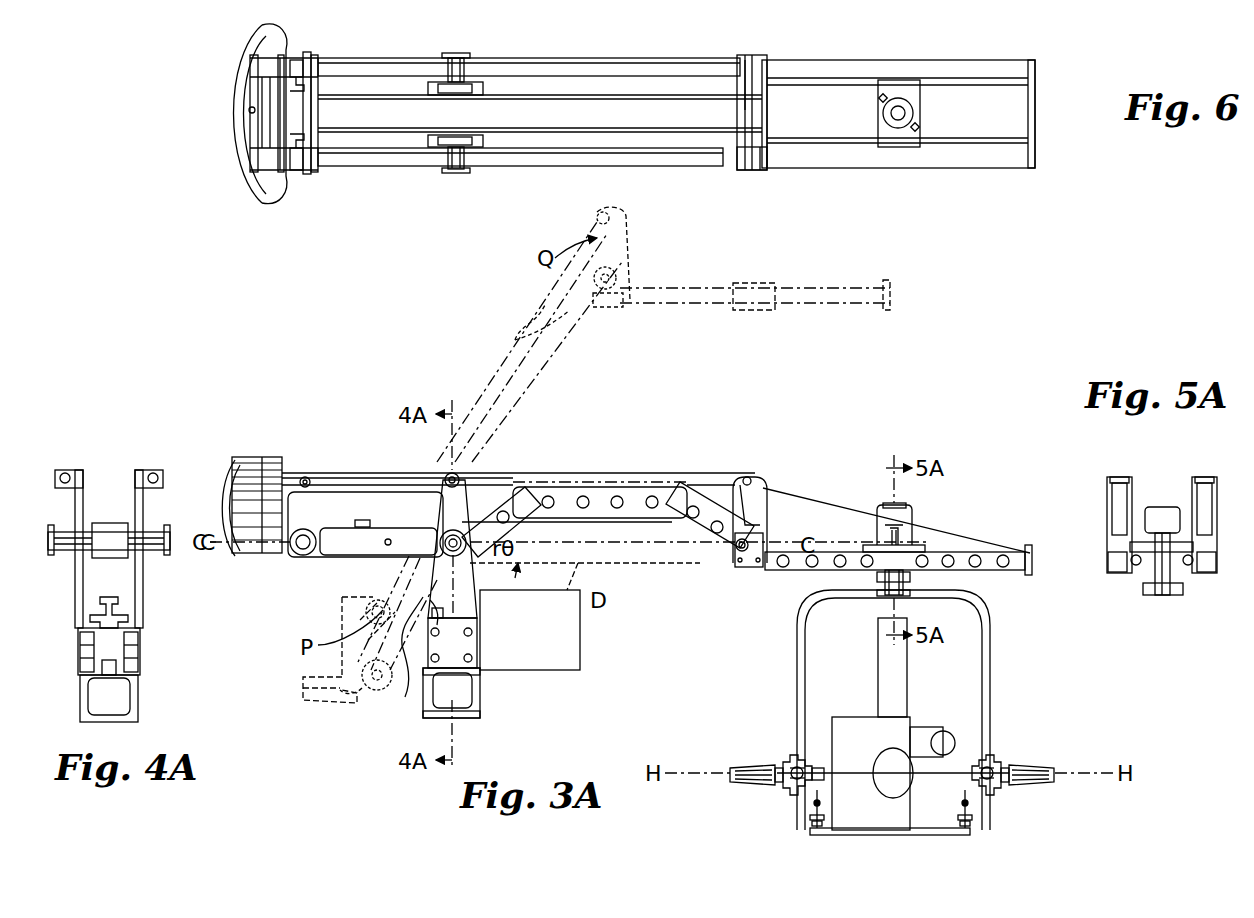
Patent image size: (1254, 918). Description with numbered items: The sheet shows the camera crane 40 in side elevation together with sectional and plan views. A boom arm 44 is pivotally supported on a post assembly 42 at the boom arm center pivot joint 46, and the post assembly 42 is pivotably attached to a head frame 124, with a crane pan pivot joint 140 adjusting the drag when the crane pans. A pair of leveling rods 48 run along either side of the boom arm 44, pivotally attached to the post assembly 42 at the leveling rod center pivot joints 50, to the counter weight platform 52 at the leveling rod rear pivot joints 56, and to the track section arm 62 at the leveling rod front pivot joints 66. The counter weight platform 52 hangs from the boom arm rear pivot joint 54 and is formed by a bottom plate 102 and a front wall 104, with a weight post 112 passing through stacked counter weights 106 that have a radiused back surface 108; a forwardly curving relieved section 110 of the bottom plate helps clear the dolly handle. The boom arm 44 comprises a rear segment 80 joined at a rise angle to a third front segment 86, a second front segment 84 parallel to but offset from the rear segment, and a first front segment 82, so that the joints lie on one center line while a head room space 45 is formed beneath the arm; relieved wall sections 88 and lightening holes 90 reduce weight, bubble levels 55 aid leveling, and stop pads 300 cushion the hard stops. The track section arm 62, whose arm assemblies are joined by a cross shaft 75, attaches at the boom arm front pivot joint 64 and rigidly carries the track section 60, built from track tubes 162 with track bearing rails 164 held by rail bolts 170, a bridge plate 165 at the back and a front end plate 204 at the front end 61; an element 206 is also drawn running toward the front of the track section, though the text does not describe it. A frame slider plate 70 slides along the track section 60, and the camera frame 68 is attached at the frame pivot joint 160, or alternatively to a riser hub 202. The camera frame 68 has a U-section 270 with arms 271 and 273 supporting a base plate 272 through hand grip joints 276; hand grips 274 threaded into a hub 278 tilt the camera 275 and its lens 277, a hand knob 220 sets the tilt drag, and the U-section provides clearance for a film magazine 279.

In FIG. 3A, the crane 40 is at (440, 388).
In FIG. 3A, the post assembly 42 is at (478, 602).
In FIG. 6, the boom arm 44 is at (552, 108).
In FIG. 3A, the boom arm 44 is at (505, 355).
In FIG. 3A, the head room space 45 is at (530, 630).
In FIG. 6, the boom arm center pivot joint 46 is at (478, 58).
In FIG. 3A, the boom arm center pivot joint 46 is at (462, 530).
In FIG. 6, the leveling rods 48 is at (628, 62).
In FIG. 3A, the leveling rods 48 is at (698, 474).
In FIG. 4A, the leveling rods 48 is at (158, 472).
In FIG. 6, the leveling rod center pivot joints 50 is at (464, 160).
In FIG. 3A, the leveling rod center pivot joints 50 is at (444, 480).
In FIG. 6, the counter weight platform 52 is at (274, 178).
In FIG. 3A, the counter weight platform 52 is at (268, 560).
In FIG. 6, the boom arm rear pivot joint 54 is at (320, 70).
In FIG. 3A, the boom arm rear pivot joint 54 is at (303, 556).
In FIG. 3A, the bubble levels 55 is at (362, 520).
In FIG. 6, the leveling rod rear pivot joints 56 is at (318, 158).
In FIG. 3A, the leveling rod rear pivot joints 56 is at (308, 478).
In FIG. 6, the track section 60 is at (950, 162).
In FIG. 3A, the track section 60 is at (820, 288).
In FIG. 3A, the front end 61 is at (1005, 572).
In FIG. 3A, the track section arm 62 is at (620, 233).
In FIG. 5A, the track section arm 62 is at (1107, 500).
In FIG. 6, the boom arm front pivot joint 64 is at (750, 58).
In FIG. 3A, the boom arm front pivot joint 64 is at (738, 567).
In FIG. 3A, the leveling rod front pivot joints 66 is at (746, 477).
In FIG. 5A, the leveling rod front pivot joints 66 is at (1122, 480).
In FIG. 3A, the camera frame 68 is at (797, 697).
In FIG. 3A, the frame slider plate 70 is at (918, 545).
In FIG. 6, the cross shaft 75 is at (752, 105).
In FIG. 3A, the rear segment 80 is at (382, 560).
In FIG. 3A, the first front segment 82 is at (710, 548).
In FIG. 3A, the second front segment 84 is at (636, 525).
In FIG. 3A, the third front segment 86 is at (508, 540).
In FIG. 3A, the relieved wall sections 88 is at (600, 495).
In FIG. 3A, the lightening holes 90 is at (652, 495).
In FIG. 3A, the bottom plate 102 is at (318, 703).
In FIG. 3A, the front wall 104 is at (292, 512).
In FIG. 3A, the counter weights 106 is at (236, 458).
In FIG. 6, the radiused back surface 108 is at (246, 190).
In FIG. 3A, the relieved section 110 is at (228, 570).
In FIG. 6, the weight post 112 is at (250, 112).
In FIG. 3A, the head frame 124 is at (476, 698).
In FIG. 4A, the head frame 124 is at (140, 697).
In FIG. 4A, the crane pan pivot joint 140 is at (125, 600).
In FIG. 3A, the frame pivot joint 160 is at (850, 574).
In FIG. 6, the track tubes 162 is at (1020, 72).
In FIG. 6, the track bearing rails 164 is at (1018, 132).
In FIG. 6, the bridge plate 165 is at (770, 122).
In FIG. 6, the rail bolts 170 is at (915, 118).
In FIG. 3A, the riser hub 202 is at (875, 525).
In FIG. 5A, the riser hub 202 is at (1158, 505).
In FIG. 6, the front end plate 204 is at (1037, 98).
In FIG. 3A, the front end plate 204 is at (1034, 560).
In FIG. 3A, the cable 206 is at (800, 495).
In FIG. 6, the hand knob 220 is at (446, 56).
In FIG. 3A, the hand knob 220 is at (990, 765).
In FIG. 3A, the U-section 270 is at (988, 683).
In FIG. 3A, the arm 271 is at (798, 672).
In FIG. 3A, the base plate 272 is at (968, 800).
In FIG. 3A, the arm 273 is at (988, 650).
In FIG. 3A, the hand grips 274 is at (745, 770).
In FIG. 3A, the camera 275 is at (852, 727).
In FIG. 3A, the hand grip joints 276 is at (785, 794).
In FIG. 3A, the camera lens 277 is at (876, 782).
In FIG. 3A, the hub 278 is at (815, 760).
In FIG. 3A, the film magazine 279 is at (900, 662).
In FIG. 3A, the stop pads 300 is at (425, 680).